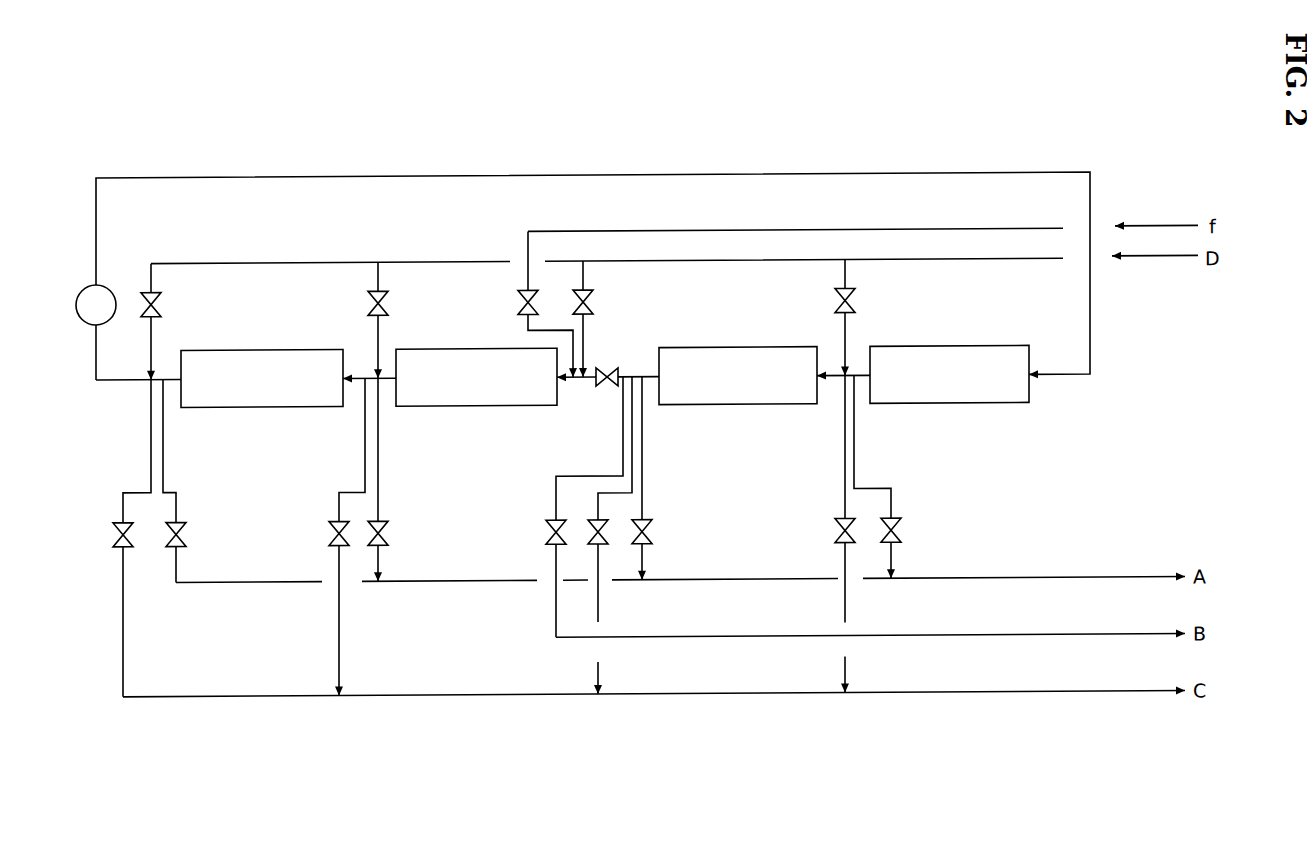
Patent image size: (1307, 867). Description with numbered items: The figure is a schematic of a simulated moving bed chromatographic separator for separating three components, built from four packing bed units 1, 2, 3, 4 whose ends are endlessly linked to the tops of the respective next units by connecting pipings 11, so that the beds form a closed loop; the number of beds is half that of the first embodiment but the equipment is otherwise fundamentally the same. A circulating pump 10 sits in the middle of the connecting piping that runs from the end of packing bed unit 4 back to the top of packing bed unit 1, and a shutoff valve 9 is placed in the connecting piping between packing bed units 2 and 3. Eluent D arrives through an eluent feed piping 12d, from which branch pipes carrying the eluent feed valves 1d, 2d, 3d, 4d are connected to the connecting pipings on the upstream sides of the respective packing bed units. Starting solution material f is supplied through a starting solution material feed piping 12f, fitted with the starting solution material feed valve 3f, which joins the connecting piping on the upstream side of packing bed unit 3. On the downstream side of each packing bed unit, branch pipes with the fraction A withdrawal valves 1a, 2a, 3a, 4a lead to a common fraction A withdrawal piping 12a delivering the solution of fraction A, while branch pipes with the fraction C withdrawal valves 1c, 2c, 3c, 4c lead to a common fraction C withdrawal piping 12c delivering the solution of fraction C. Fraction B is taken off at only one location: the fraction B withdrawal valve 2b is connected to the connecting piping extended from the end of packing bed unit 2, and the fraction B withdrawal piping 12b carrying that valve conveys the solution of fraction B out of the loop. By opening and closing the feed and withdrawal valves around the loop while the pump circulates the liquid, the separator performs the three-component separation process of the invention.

The packing bed unit 1 is at (957, 409).
The packing bed unit 2 is at (737, 409).
The packing bed unit 3 is at (473, 409).
The packing bed unit 4 is at (270, 409).
The shutoff valve 9 is at (606, 392).
The circulating pump 10 is at (84, 322).
The connecting pipings 11 is at (1053, 178).
The fraction A withdrawal piping 12a is at (1108, 583).
The fraction B withdrawal piping 12b is at (1115, 640).
The fraction C withdrawal piping 12c is at (1037, 697).
The eluent feed piping 12d is at (907, 266).
The starting solution material feed piping 12f is at (970, 236).
The fraction A withdrawal valve 1a is at (901, 533).
The fraction C withdrawal valve 1c is at (833, 534).
The eluent feed valve 1d is at (163, 305).
The fraction A withdrawal valve 2a is at (652, 538).
The fraction B withdrawal valve 2b is at (546, 537).
The fraction C withdrawal valve 2c is at (608, 522).
The eluent feed valve 2d is at (856, 307).
The fraction A withdrawal valve 3a is at (388, 536).
The fraction C withdrawal valve 3c is at (329, 533).
The eluent feed valve 3d is at (594, 306).
The starting solution material feed valve 3f is at (517, 304).
The fraction A withdrawal valve 4a is at (173, 550).
The fraction C withdrawal valve 4c is at (113, 531).
The eluent feed valve 4d is at (367, 303).